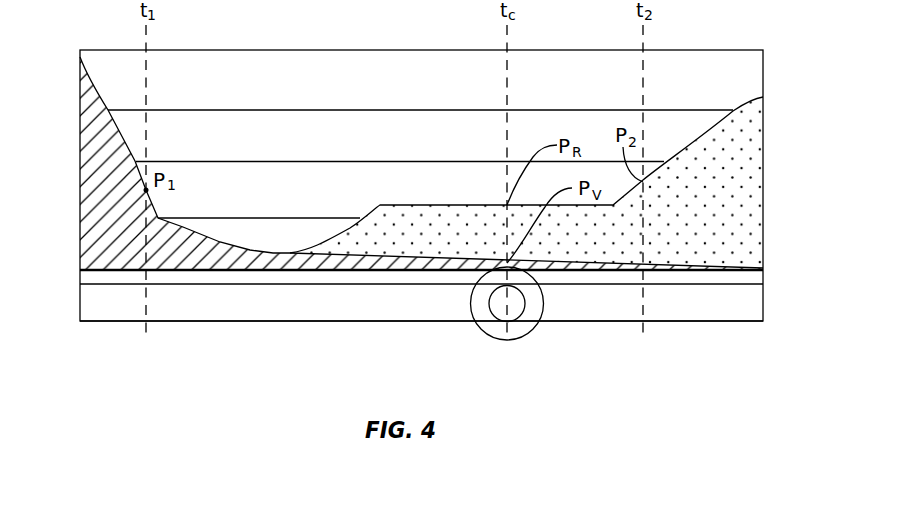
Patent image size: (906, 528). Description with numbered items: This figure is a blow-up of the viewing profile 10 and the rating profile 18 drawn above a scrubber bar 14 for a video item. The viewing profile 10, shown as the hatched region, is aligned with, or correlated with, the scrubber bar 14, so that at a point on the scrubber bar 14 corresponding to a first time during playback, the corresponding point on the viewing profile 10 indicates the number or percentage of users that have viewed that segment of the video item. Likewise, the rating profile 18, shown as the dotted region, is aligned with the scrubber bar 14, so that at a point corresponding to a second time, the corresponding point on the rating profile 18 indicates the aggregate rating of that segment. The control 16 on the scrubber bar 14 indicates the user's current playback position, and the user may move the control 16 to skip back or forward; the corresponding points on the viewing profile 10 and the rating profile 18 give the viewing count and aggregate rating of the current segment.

The viewing profile 10 is at (123, 239).
The scrubber bar 14 is at (413, 321).
The control 16 is at (517, 303).
The rating profile 18 is at (672, 223).